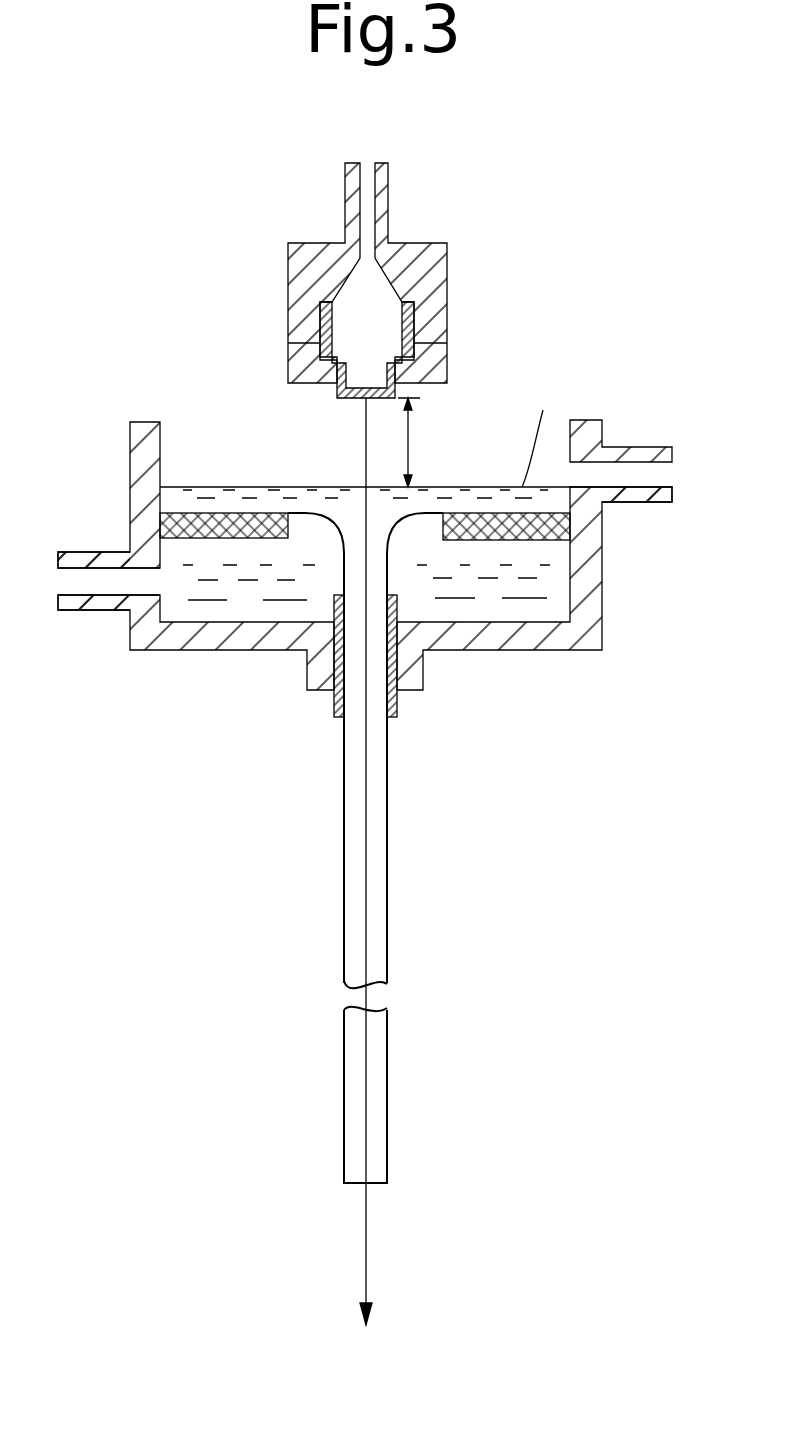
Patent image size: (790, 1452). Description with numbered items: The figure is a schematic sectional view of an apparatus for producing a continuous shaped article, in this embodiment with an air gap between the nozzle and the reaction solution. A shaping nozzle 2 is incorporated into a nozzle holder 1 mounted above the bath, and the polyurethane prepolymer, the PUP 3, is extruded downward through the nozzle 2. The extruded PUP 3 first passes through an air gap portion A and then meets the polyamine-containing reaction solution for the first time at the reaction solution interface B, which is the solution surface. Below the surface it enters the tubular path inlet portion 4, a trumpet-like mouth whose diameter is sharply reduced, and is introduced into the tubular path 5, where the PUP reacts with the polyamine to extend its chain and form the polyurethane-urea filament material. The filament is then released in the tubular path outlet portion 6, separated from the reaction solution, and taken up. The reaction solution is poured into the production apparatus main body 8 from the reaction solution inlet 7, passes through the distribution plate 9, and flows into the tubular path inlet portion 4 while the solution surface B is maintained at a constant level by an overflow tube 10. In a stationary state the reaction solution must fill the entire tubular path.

The nozzle holder 1 is at (428, 243).
The shaping nozzle 2 is at (398, 392).
The PUP 3 is at (365, 470).
The tubular path inlet portion 4 is at (333, 513).
The tubular path main body 5 is at (388, 878).
The tubular path outlet portion 6 is at (375, 1180).
The reaction solution inlet 7 is at (83, 613).
The production apparatus main body 8 is at (577, 650).
The distribution plate 9 is at (195, 513).
The overflow tube 10 is at (637, 502).
The air gap portion A is at (415, 442).
The reaction solution interface B is at (538, 428).